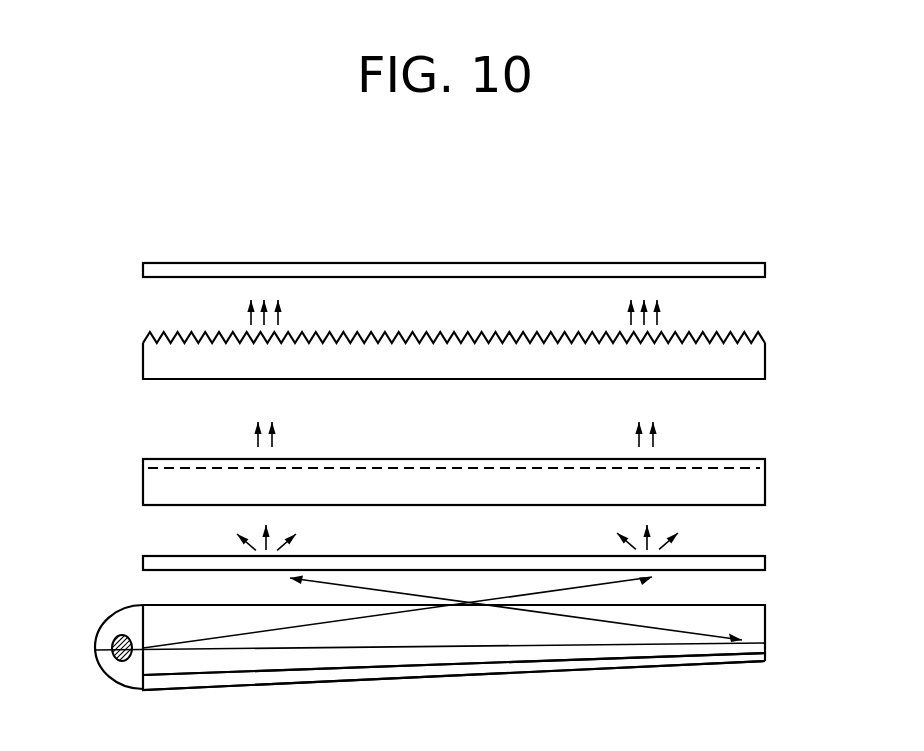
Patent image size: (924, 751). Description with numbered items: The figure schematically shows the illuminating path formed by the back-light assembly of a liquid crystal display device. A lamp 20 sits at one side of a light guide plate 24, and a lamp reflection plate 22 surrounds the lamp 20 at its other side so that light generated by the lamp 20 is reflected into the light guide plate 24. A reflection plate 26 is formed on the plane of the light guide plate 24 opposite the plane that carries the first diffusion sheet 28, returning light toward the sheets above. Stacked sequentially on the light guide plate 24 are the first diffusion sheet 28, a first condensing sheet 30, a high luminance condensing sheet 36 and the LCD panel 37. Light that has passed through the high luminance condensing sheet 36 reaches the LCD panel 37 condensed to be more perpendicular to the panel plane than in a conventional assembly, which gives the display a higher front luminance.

The lamp 20 is at (95, 650).
The lamp reflection plate 22 is at (110, 623).
The light guide plate 24 is at (765, 622).
The reflection plate 26 is at (765, 656).
The first diffusion sheet 28 is at (767, 558).
The first condensing sheet 30 is at (765, 484).
The high luminance condensing sheet 36 is at (758, 357).
The LCD panel 37 is at (765, 266).